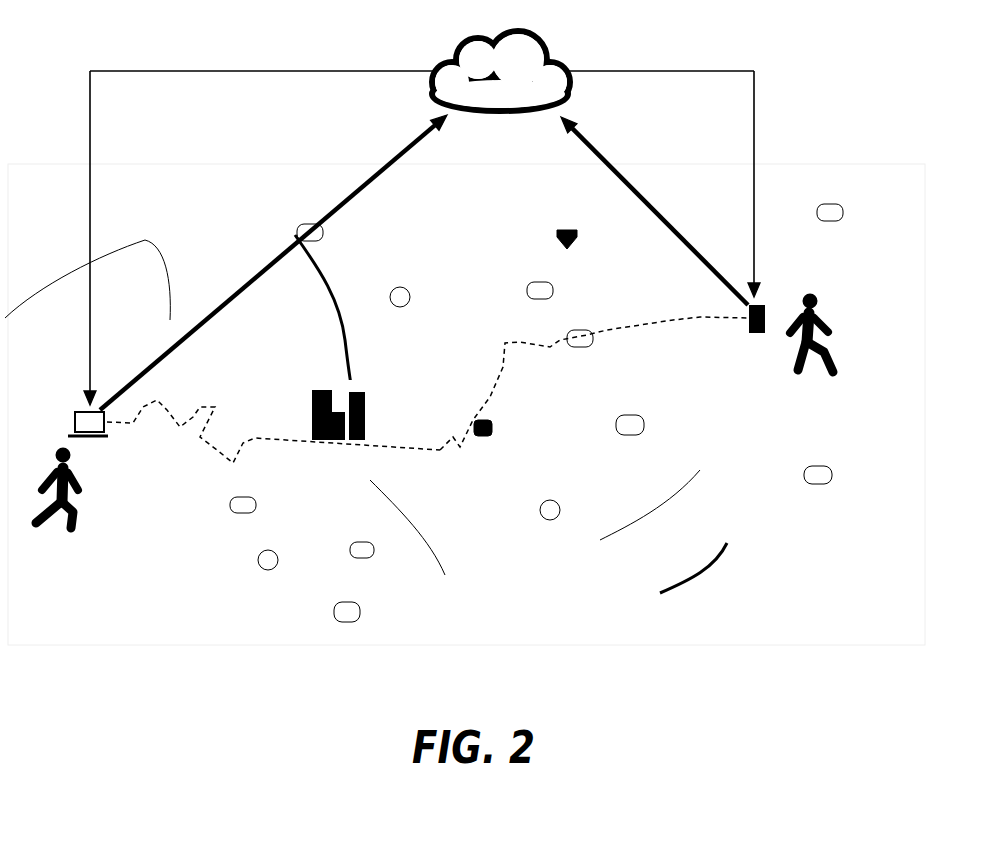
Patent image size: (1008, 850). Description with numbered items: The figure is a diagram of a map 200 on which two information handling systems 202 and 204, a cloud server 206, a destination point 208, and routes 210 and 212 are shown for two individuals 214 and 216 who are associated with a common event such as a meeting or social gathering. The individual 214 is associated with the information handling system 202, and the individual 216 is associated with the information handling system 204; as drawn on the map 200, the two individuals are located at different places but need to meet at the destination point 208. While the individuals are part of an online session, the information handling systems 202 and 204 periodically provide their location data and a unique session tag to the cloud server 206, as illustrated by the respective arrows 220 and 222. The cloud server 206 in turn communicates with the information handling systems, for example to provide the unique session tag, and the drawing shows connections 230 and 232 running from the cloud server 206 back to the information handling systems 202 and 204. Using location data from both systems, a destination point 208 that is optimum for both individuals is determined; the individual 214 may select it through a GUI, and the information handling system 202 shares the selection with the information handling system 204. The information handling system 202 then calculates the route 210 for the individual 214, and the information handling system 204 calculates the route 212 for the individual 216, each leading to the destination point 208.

The map 200 is at (862, 638).
The information handling system 202 is at (75, 413).
The information handling system 204 is at (755, 336).
The cloud server 206 is at (543, 48).
The destination point 208 is at (350, 406).
The route 210 is at (273, 431).
The route 212 is at (490, 398).
The individual 214 is at (80, 506).
The individual 216 is at (828, 328).
The arrow 220 is at (358, 186).
The arrow 222 is at (595, 142).
The communication link from cloud server to first device 230 is at (90, 121).
The communication link from cloud server to second device 232 is at (754, 126).